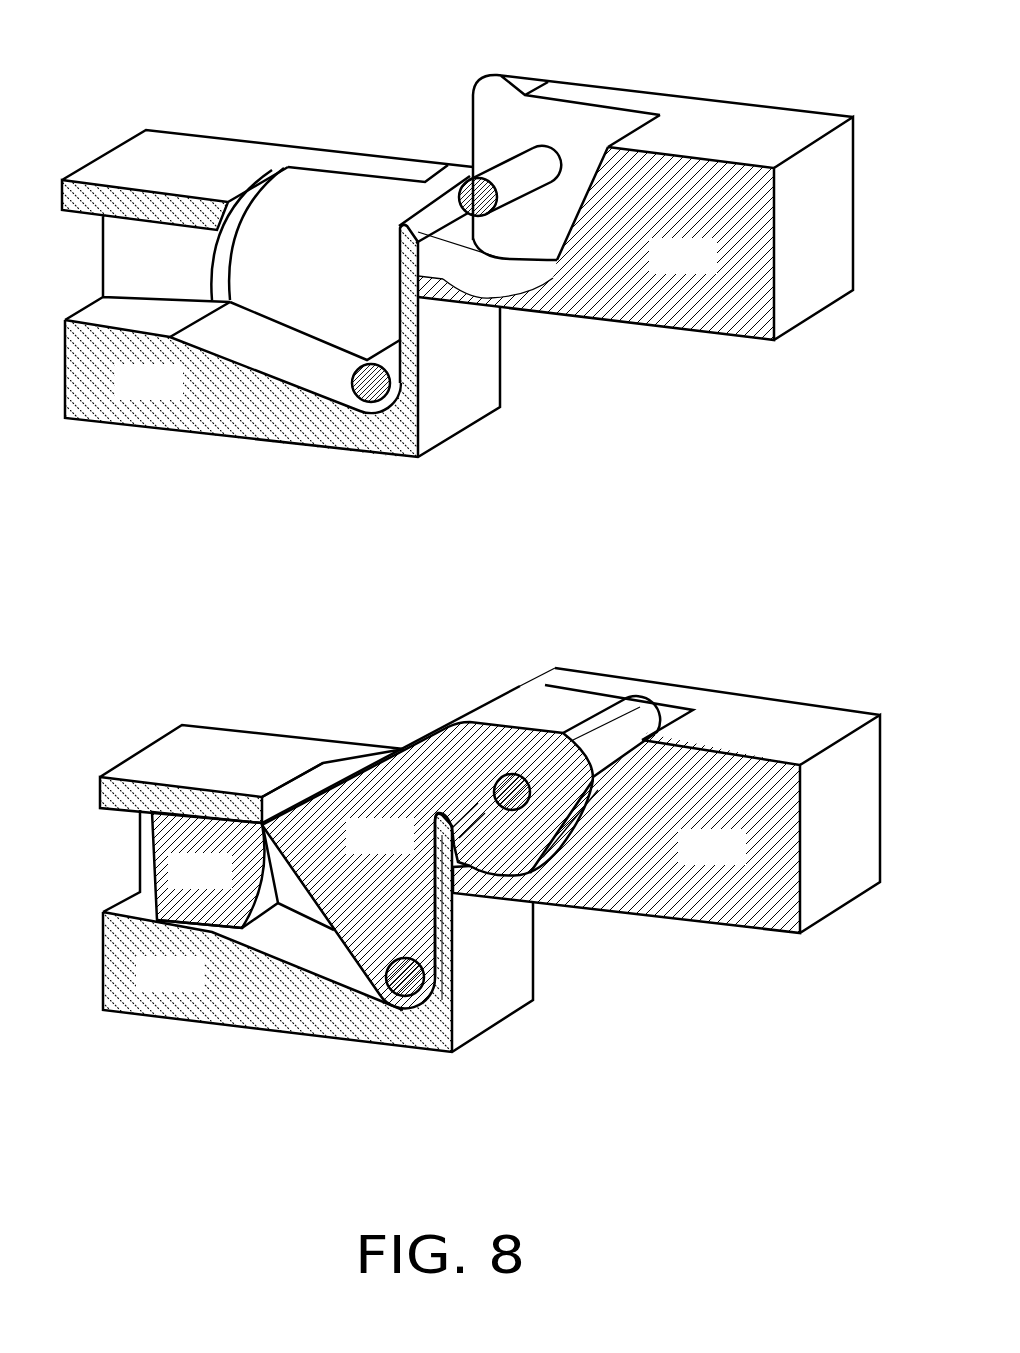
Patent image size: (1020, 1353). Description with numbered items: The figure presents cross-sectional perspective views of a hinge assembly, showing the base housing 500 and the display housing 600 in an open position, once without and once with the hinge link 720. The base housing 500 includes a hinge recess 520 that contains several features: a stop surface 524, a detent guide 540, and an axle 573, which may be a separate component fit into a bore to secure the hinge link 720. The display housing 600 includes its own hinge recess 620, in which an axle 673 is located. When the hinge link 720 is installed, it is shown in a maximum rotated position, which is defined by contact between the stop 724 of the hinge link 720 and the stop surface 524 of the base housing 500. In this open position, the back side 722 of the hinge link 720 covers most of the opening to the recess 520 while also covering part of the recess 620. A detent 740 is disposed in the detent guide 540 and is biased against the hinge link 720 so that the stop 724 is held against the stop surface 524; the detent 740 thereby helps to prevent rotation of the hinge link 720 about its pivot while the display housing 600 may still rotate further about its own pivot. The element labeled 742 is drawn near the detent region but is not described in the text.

The base housing 500 is at (126, 395).
The detent guide 540 is at (135, 274).
The hinge recess 520 is at (346, 138).
The stop surface 524 is at (403, 295).
The axle 573 is at (369, 362).
The axle 673 is at (524, 163).
The hinge recess 620 is at (601, 82).
The display housing 600 is at (661, 269).
The hinge link 720 is at (358, 849).
The back side 722 is at (413, 730).
The detent 740 is at (178, 884).
The edge of support block 742 is at (276, 793).
The stop 724 is at (436, 950).